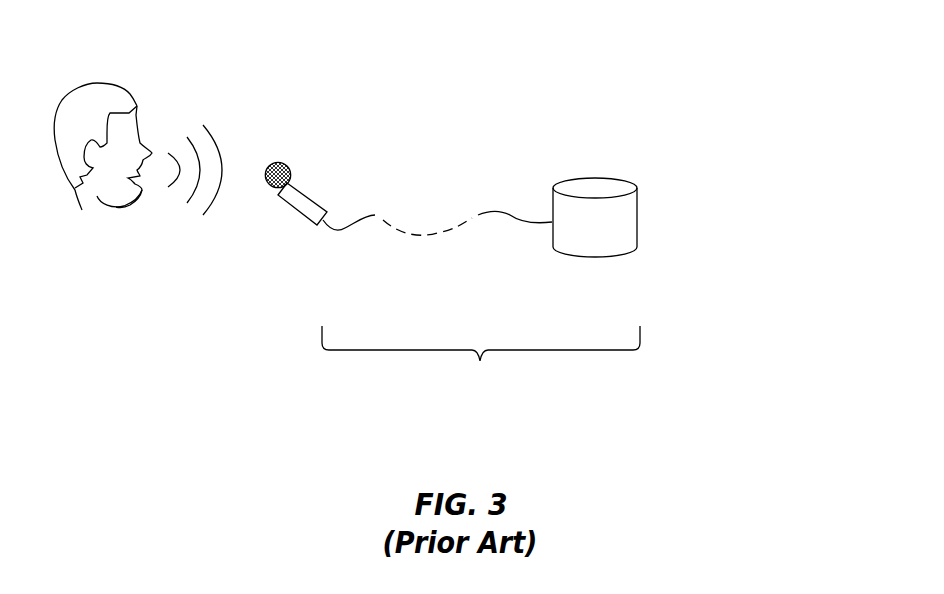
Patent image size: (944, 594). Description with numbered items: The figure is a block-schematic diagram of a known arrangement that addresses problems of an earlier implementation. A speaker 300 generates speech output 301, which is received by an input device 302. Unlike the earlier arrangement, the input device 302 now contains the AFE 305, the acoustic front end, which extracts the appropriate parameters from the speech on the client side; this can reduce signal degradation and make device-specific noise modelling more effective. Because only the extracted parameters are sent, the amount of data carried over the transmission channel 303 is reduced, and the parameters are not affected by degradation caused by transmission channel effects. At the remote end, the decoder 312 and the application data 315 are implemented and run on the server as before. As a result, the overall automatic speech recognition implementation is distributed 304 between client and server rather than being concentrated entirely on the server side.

The speaker 300 is at (93, 238).
The speech output 301 is at (177, 238).
The input device 302 is at (298, 238).
The transmission channel 303 is at (430, 222).
The distributed ASR implementation 304 is at (481, 365).
The AFE 305 is at (309, 179).
The decoder 312 is at (649, 212).
The application data 315 is at (652, 237).